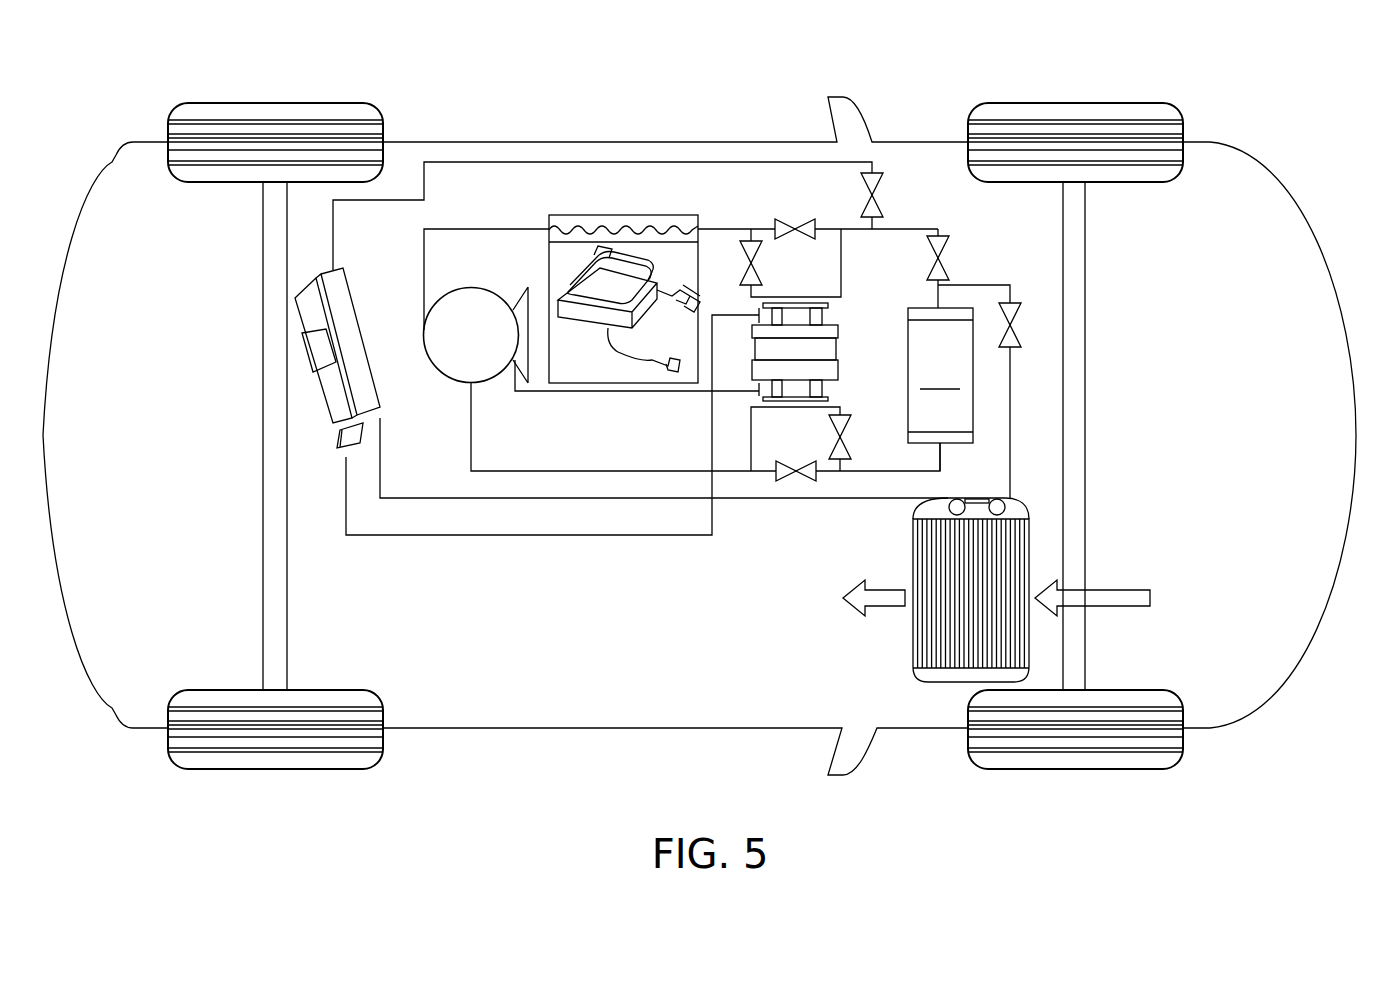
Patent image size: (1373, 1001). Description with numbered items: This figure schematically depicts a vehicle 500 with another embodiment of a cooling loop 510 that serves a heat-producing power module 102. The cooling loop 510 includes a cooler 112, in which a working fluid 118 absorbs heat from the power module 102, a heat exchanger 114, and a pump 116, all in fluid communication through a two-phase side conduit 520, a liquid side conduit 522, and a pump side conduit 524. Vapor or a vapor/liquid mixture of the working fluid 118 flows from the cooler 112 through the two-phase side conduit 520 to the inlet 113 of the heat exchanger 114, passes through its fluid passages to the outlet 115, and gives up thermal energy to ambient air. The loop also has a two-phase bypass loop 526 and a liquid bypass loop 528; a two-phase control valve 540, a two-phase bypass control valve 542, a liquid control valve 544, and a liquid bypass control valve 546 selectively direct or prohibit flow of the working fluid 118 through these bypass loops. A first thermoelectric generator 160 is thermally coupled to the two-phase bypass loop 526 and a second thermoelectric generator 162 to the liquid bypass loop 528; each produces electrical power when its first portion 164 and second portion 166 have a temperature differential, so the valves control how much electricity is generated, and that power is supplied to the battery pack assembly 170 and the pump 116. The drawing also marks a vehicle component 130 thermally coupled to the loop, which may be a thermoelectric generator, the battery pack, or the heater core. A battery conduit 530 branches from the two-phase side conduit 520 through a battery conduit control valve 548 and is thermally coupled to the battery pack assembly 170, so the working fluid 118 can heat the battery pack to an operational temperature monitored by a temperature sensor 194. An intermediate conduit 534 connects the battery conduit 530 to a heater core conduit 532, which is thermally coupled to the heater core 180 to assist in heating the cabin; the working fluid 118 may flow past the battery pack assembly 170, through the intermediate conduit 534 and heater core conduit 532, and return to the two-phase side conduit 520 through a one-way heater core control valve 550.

The vehicle 500 is at (1260, 113).
The cooling loop 510 is at (602, 164).
The battery conduit 530 is at (487, 162).
The pump side conduit 524 is at (486, 229).
The pump 116 is at (481, 287).
The liquid side conduit 522 is at (612, 471).
The cooler 112 is at (624, 277).
The working fluid 118 is at (570, 237).
The power module 102 is at (587, 313).
The vehicle component 130 is at (738, 308).
The two-phase bypass loop 526 is at (841, 250).
The two-phase control valve 540 is at (783, 220).
The two-phase bypass control valve 542 is at (757, 262).
The battery conduit control valve 548 is at (862, 196).
The two-phase side conduit 520 is at (908, 228).
The inlet 113 is at (944, 306).
The heater core control valve 550 is at (1021, 333).
The first thermoelectric generator 160 is at (793, 355).
The first portion 164 is at (828, 303).
The second portion 166 is at (840, 330).
The second thermoelectric generator 162 is at (846, 389).
The liquid bypass loop 528 is at (751, 462).
The liquid bypass control valve 546 is at (832, 450).
The liquid control valve 544 is at (790, 481).
The heat exchanger 114 is at (940, 375).
The outlet 115 is at (940, 446).
The heater core conduit 532 is at (1012, 437).
The intermediate conduit 534 is at (610, 498).
The battery pack assembly 170 is at (289, 325).
The temperature sensor 194 is at (315, 355).
The heater core 180 is at (913, 632).